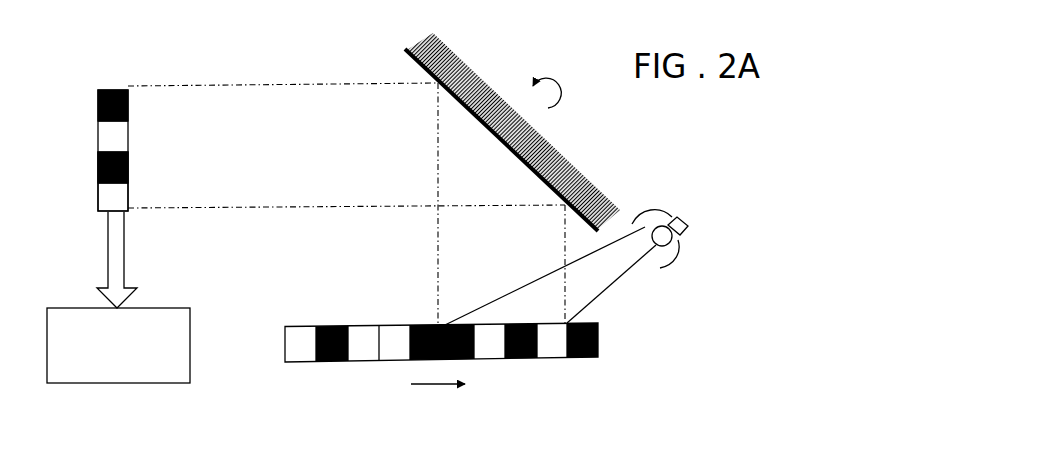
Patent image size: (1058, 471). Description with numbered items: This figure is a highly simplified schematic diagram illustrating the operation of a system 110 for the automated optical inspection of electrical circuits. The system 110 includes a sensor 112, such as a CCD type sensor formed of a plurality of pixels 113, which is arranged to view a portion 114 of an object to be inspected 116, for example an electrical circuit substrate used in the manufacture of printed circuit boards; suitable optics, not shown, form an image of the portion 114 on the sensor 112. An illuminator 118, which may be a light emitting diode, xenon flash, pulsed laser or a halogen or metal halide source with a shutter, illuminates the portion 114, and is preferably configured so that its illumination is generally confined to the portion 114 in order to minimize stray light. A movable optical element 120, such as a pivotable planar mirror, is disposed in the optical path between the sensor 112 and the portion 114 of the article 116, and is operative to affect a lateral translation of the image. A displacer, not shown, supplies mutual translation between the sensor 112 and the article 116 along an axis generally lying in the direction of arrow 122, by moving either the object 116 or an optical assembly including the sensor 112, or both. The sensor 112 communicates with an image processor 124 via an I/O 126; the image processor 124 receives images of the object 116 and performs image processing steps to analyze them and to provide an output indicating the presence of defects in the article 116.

The system 110 is at (708, 150).
The sensor 112 is at (79, 131).
The pixels 113 is at (132, 198).
The portion of an object to be inspected 114 is at (494, 280).
The object to be inspected 116 is at (598, 337).
The illuminator 118 is at (688, 219).
The movable optical element 120 is at (405, 53).
The arrow 122 is at (437, 387).
The image processor 124 is at (143, 375).
The I/O 126 is at (116, 248).